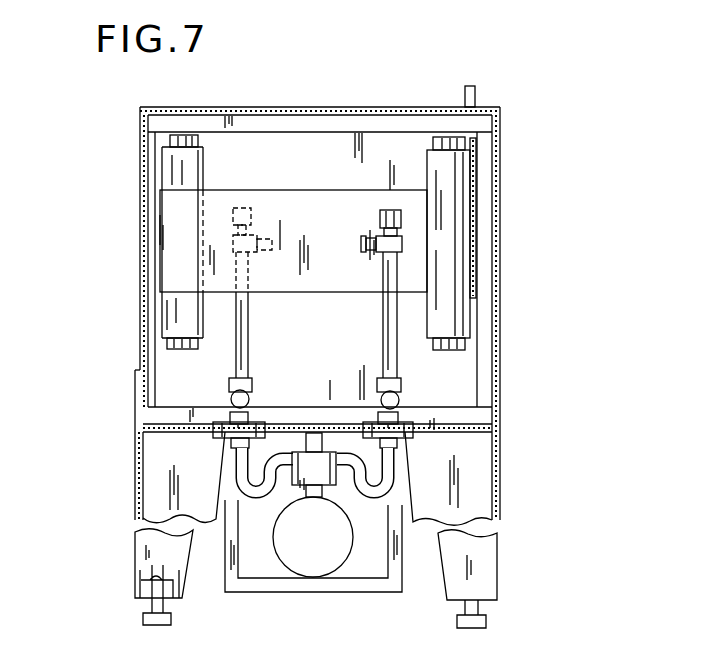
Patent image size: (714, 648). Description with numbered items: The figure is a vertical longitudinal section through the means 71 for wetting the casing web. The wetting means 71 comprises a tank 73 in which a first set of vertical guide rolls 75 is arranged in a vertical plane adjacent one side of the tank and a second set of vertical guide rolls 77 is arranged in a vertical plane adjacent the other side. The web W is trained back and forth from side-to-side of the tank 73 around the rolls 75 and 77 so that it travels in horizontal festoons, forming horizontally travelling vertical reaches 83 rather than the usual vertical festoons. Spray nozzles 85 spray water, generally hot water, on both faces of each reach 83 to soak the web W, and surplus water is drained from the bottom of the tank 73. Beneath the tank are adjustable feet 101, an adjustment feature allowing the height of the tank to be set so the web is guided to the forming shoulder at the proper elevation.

The tank 73 is at (140, 131).
The means for wetting the web 71 is at (118, 270).
The second set of vertical guide rolls 77 is at (185, 302).
The first set of vertical guide rolls 75 is at (458, 322).
The web W is at (474, 243).
The horizontally travelling vertical reach 83 is at (321, 292).
The spray nozzle 85 is at (362, 247).
The adjustable feet 101 is at (142, 618).